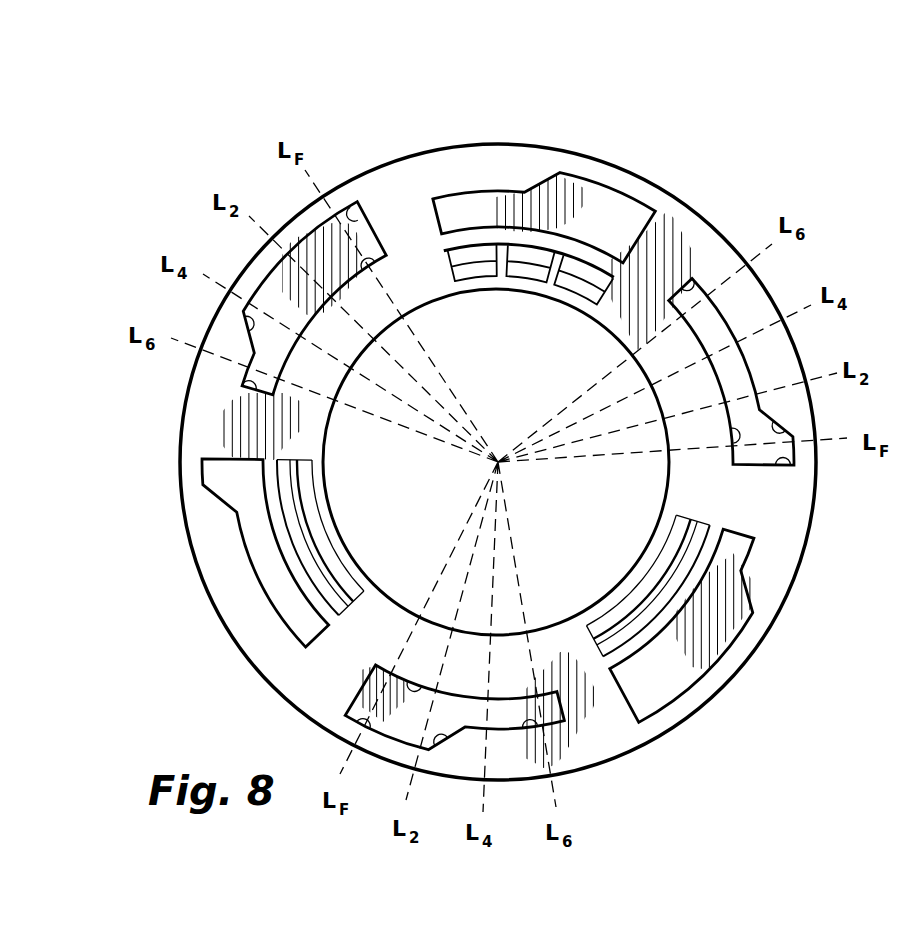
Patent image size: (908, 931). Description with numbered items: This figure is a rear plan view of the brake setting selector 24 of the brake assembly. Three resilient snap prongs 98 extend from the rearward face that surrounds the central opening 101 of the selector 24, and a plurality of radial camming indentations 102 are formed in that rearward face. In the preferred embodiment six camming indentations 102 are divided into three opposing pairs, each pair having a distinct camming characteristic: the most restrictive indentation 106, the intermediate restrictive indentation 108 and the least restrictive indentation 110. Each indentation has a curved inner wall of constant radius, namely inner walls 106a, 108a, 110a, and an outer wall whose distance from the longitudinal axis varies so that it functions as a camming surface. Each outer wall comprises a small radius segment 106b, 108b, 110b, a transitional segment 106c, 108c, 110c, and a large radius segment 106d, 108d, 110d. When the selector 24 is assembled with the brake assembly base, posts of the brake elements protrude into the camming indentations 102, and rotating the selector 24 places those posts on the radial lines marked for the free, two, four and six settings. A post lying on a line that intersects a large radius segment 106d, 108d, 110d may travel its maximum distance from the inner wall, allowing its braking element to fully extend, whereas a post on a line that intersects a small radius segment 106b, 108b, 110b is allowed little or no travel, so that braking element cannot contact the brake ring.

The brake setting selector 24 is at (709, 732).
The resilient snap prongs 98 is at (527, 282).
The central opening 101 is at (537, 403).
The radial camming indentations 102 is at (522, 177).
The most restrictive camming indentation 106 is at (519, 430).
The curved inner wall 106a is at (733, 441).
The small radius segment 106b is at (694, 288).
The transitional segment 106c is at (782, 427).
The large radius segment 106d is at (795, 468).
The intermediate restrictive camming indentation 108 is at (456, 468).
The curved inner wall 108a is at (416, 682).
The small radius segment 108b is at (540, 727).
The transitional segment 108c is at (445, 753).
The large radius segment 108d is at (360, 724).
The least restrictive camming indentation 110 is at (514, 406).
The curved inner wall 110a is at (368, 258).
The small radius segment 110b is at (246, 384).
The transitional segment 110c is at (246, 320).
The large radius segment 110d is at (357, 207).